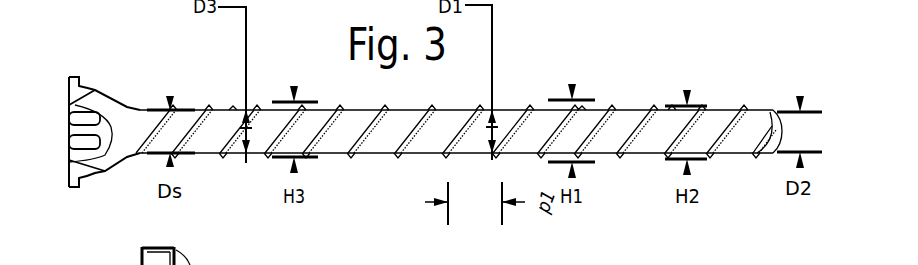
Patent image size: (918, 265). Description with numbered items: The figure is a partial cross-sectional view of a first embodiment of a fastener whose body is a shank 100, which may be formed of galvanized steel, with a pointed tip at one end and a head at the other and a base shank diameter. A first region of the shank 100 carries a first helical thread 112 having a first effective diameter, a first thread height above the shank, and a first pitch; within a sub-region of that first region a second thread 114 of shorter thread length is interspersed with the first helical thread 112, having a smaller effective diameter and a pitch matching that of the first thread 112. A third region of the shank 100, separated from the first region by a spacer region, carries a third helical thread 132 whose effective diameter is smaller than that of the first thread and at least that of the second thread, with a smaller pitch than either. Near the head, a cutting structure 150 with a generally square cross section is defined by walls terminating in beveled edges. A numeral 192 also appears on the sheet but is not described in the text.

The shank 100 is at (407, 132).
The cutting structure 150 is at (103, 176).
The third helical thread 132 is at (253, 109).
The first helical thread 112 is at (581, 108).
The second thread 114 is at (672, 105).
The adjacent figure element 192 is at (204, 252).